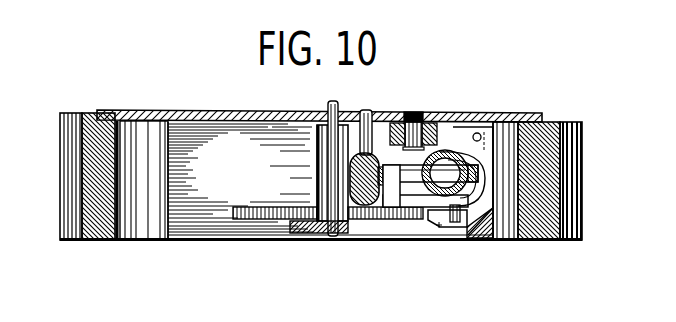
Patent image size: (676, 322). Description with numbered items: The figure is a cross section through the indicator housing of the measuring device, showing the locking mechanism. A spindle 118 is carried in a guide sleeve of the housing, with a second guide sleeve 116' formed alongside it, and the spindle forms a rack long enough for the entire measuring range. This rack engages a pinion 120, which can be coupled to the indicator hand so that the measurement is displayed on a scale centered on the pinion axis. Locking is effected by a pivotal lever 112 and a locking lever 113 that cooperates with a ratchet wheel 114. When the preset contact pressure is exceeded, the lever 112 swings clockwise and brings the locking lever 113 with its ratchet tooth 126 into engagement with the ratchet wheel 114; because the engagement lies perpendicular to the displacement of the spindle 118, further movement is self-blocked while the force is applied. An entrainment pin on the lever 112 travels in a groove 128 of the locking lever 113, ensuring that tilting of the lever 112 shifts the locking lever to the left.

The pivotal lever 112 is at (395, 167).
The locking lever 113 is at (490, 147).
The ratchet wheel 114 is at (262, 211).
The guide sleeve 116' is at (446, 138).
The spindle 118 is at (363, 200).
The pinion 120 is at (332, 133).
The ratchet tooth 126 is at (441, 227).
The groove 128 is at (468, 223).